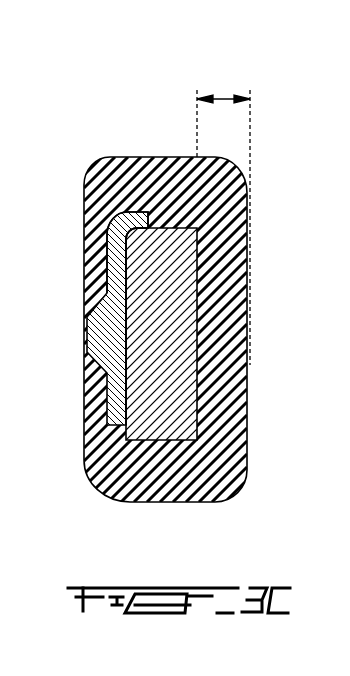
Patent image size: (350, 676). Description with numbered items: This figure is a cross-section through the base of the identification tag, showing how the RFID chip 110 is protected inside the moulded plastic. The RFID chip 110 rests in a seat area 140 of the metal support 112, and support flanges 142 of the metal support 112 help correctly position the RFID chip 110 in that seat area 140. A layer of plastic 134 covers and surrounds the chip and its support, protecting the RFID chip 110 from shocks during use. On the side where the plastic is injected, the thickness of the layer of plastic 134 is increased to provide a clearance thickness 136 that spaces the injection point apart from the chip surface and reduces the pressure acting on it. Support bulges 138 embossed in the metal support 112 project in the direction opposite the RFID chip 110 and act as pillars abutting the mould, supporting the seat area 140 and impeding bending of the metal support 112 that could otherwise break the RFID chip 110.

The RFID chip 110 is at (168, 415).
The metal support 112 is at (110, 245).
The layer of plastic 134 is at (250, 340).
The clearance thickness 136 is at (222, 97).
The support bulges 138 is at (86, 314).
The seat area 140 is at (135, 272).
The support flanges 142 is at (140, 240).